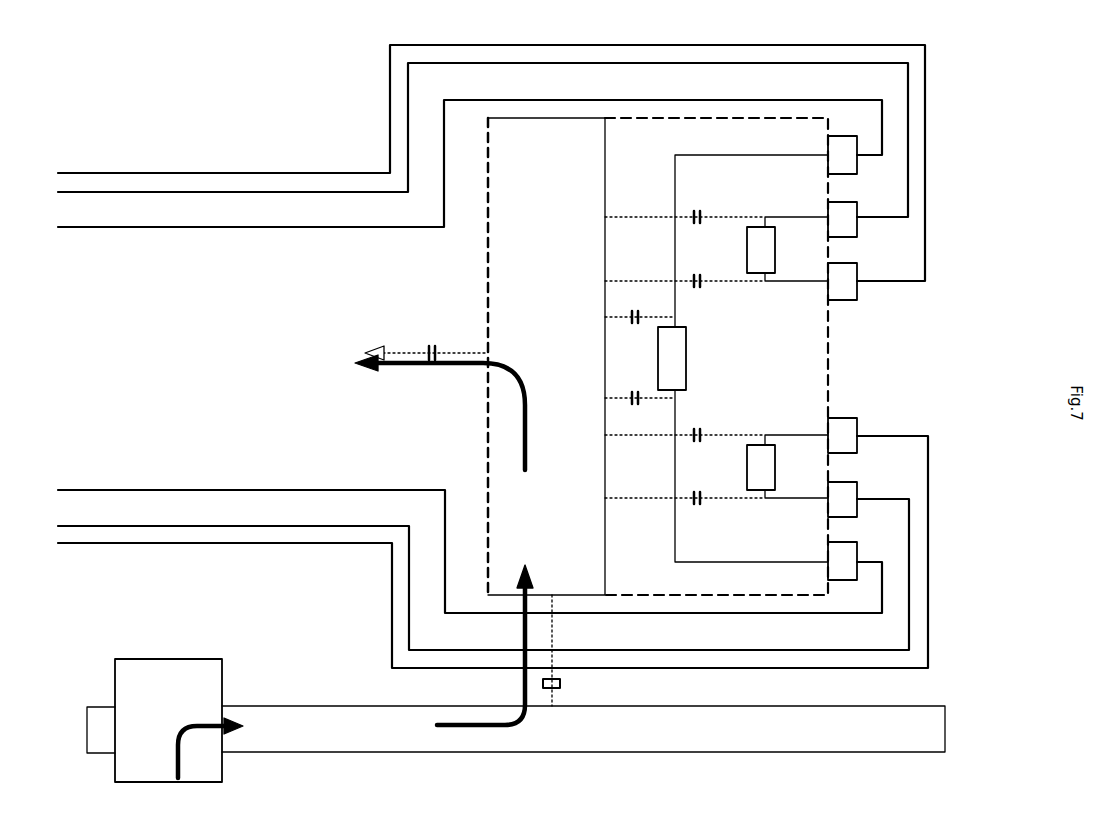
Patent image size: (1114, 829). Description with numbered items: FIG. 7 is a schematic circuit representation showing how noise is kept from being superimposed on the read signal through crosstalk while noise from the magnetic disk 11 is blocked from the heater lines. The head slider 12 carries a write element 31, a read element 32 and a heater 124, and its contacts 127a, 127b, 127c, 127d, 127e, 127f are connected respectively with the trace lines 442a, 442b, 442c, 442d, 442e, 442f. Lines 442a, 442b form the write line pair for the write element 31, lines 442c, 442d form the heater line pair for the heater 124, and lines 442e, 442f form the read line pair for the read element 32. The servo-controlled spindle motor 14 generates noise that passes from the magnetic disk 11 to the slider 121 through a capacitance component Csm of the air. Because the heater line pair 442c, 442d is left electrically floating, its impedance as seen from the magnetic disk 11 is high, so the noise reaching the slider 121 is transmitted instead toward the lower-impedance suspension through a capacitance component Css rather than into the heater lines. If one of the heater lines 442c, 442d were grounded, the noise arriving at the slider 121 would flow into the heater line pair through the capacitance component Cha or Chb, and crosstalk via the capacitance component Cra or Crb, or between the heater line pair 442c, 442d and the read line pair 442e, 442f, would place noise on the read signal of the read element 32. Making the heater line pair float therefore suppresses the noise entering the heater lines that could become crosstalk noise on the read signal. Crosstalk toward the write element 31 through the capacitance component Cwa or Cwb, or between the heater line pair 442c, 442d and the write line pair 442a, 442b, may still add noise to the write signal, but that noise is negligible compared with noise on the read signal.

The magnetic disk 11 is at (342, 705).
The head slider 12 is at (830, 355).
The spindle motor 14 is at (180, 658).
The write element 31 is at (747, 468).
The read element 32 is at (747, 250).
The slider 121 is at (612, 551).
The heater 124 is at (686, 360).
The contact 127a is at (858, 448).
The contact 127b is at (858, 490).
The contact 127c is at (876, 548).
The contact 127d is at (858, 170).
The contact 127e is at (858, 232).
The contact 127f is at (858, 295).
The write line 442a is at (240, 546).
The write line 442b is at (280, 525).
The heater line 442c is at (195, 489).
The heater line 442d is at (238, 228).
The read line 442e is at (280, 191).
The read line 442f is at (180, 173).
The capacitance component Cra is at (707, 204).
The capacitance component Crb is at (708, 292).
The capacitance component Cha is at (629, 304).
The capacitance component Chb is at (630, 411).
The capacitance component Cwa is at (711, 422).
The capacitance component Cwb is at (711, 510).
The capacitance component Css is at (426, 339).
The capacitance component Csm is at (573, 650).